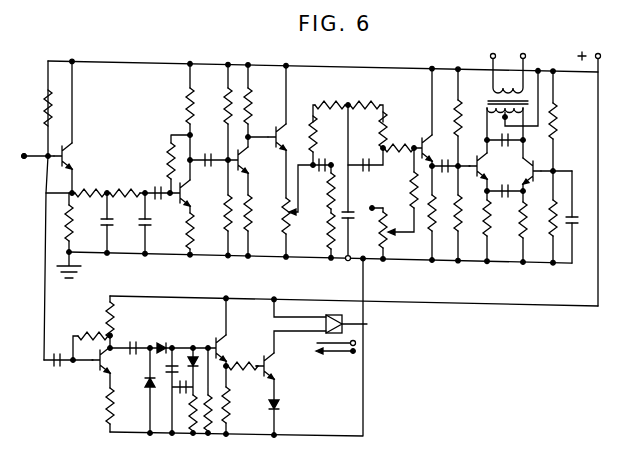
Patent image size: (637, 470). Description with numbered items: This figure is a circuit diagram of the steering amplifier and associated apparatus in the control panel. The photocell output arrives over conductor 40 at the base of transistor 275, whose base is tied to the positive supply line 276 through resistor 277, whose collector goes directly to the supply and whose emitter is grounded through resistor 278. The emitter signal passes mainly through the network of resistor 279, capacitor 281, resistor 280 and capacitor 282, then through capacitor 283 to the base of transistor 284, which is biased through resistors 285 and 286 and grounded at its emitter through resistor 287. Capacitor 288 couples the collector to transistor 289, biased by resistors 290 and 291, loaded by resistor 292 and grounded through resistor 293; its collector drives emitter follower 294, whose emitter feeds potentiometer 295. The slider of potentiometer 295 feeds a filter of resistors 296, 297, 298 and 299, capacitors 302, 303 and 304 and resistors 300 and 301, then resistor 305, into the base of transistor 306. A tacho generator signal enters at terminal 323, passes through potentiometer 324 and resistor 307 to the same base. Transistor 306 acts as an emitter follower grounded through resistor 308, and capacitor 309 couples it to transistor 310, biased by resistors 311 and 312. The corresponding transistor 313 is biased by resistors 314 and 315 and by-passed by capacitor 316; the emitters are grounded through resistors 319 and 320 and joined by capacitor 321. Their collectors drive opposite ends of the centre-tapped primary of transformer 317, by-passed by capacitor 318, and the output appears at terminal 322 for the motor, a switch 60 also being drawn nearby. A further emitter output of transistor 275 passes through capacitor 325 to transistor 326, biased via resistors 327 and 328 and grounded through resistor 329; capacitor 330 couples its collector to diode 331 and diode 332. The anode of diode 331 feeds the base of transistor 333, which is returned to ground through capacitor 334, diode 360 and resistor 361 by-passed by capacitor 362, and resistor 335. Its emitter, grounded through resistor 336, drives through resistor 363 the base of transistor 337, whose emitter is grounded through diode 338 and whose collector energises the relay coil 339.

The conductor 40 is at (30, 167).
The switch 60 is at (353, 352).
The transistor 275 is at (66, 147).
The positive supply line 276 is at (125, 62).
The resistor 277 is at (47, 112).
The resistor 278 is at (74, 211).
The resistor 279 is at (90, 187).
The resistor 280 is at (125, 187).
The capacitor 281 is at (110, 222).
The capacitor 282 is at (144, 223).
The capacitor 283 is at (156, 199).
The transistor 284 is at (189, 190).
The resistor 285 is at (170, 158).
The resistor 286 is at (190, 101).
The resistor 287 is at (190, 229).
The capacitor 288 is at (212, 154).
The transistor 289 is at (243, 156).
The resistor 290 is at (228, 101).
The resistor 291 is at (228, 220).
The resistor 292 is at (249, 104).
The resistor 293 is at (248, 208).
The emitter follower 294 is at (280, 128).
The potentiometer 295 is at (288, 214).
The resistor 296 is at (325, 134).
The resistor 297 is at (328, 103).
The resistor 298 is at (357, 103).
The resistor 299 is at (383, 128).
The resistor 300 is at (330, 188).
The resistor 301 is at (329, 238).
The capacitor 302 is at (316, 169).
The capacitor 303 is at (363, 174).
The capacitor 304 is at (346, 215).
The resistor 305 is at (406, 144).
The transistor 306 is at (426, 137).
The resistor 307 is at (414, 184).
The resistor 308 is at (434, 216).
The capacitor 309 is at (441, 171).
The transistor 310 is at (475, 160).
The resistor 311 is at (457, 118).
The resistor 312 is at (459, 217).
The transistor 313 is at (531, 162).
The resistor 314 is at (556, 121).
The resistor 315 is at (553, 213).
The capacitor 316 is at (576, 224).
The transformer 317 is at (488, 103).
The capacitor 318 is at (505, 145).
The resistor 319 is at (492, 214).
The resistor 320 is at (523, 231).
The capacitor 321 is at (505, 189).
The terminal 322 is at (493, 55).
The terminal 323 is at (373, 207).
The potentiometer 324 is at (386, 240).
The capacitor 325 is at (56, 374).
The transistor 326 is at (101, 369).
The resistor 327 is at (99, 332).
The resistor 328 is at (113, 320).
The resistor 329 is at (108, 398).
The capacitor 330 is at (133, 343).
The diode 331 is at (175, 335).
The diode 332 is at (148, 382).
The transistor 333 is at (220, 341).
The capacitor 334 is at (172, 365).
The resistor 335 is at (210, 418).
The resistor 336 is at (228, 397).
The transistor 337 is at (275, 358).
The diode 338 is at (277, 404).
The coil of the relay 339 is at (359, 325).
The diode 360 is at (195, 355).
The resistor 361 is at (193, 418).
The capacitor 362 is at (182, 392).
The resistor 363 is at (248, 369).